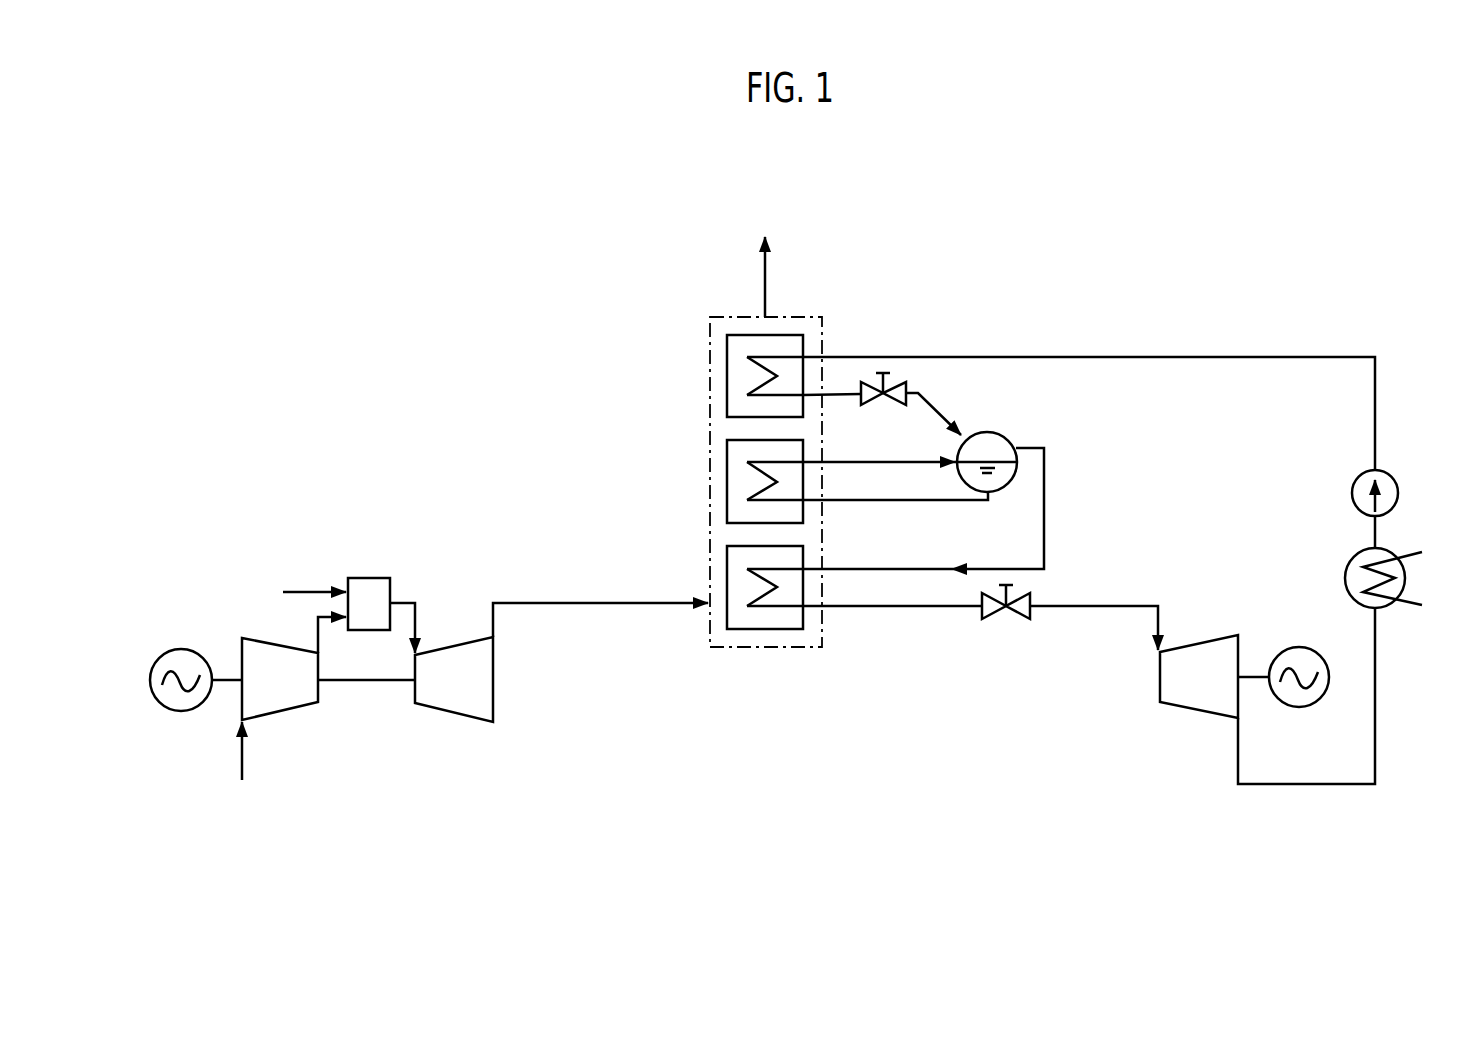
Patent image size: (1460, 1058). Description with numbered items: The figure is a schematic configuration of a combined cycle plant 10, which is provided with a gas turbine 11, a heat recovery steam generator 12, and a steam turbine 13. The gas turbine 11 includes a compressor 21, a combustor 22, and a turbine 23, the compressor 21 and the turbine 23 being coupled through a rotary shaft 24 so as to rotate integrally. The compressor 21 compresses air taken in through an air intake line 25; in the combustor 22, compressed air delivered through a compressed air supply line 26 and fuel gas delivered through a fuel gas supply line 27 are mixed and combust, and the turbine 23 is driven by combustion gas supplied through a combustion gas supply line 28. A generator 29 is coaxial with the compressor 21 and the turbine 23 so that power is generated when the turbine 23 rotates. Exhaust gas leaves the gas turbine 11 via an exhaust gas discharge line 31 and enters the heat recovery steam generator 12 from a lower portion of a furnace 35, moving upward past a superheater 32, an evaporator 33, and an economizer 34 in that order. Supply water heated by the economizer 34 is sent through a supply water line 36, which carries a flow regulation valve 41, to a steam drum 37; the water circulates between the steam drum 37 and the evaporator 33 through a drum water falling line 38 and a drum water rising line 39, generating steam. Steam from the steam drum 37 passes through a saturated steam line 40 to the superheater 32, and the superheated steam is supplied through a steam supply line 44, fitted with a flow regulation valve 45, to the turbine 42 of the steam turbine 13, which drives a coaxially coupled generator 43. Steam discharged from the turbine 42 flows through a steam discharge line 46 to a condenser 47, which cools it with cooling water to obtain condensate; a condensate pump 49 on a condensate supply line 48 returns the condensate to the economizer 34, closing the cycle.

The combined cycle plant 10 is at (568, 335).
The gas turbine 11 is at (338, 540).
The heat recovery steam generator 12 is at (848, 312).
The steam turbine 13 is at (1134, 754).
The compressor 21 is at (280, 713).
The combustor 22 is at (375, 577).
The turbine 23 is at (455, 713).
The rotary shaft 24 is at (368, 682).
The air intake line 25 is at (242, 758).
The compressed air supply line 26 is at (317, 627).
The fuel gas supply line 27 is at (297, 590).
The combustion gas supply line 28 is at (408, 602).
The generator 29 is at (150, 678).
The exhaust gas discharge line 31 is at (590, 600).
The superheater 32 is at (727, 558).
The evaporator 33 is at (727, 473).
The economizer 34 is at (727, 370).
The furnace 35 is at (805, 650).
The supply water line 36 is at (940, 407).
The steam drum 37 is at (1012, 437).
The drum water falling line 38 is at (918, 503).
The drum water rising line 39 is at (875, 460).
The saturated steam line 40 is at (1045, 497).
The flow regulation valve 41 is at (890, 365).
The turbine 42 is at (1198, 640).
The generator 43 is at (1297, 645).
The steam supply line 44 is at (913, 608).
The flow regulation valve 45 is at (1013, 620).
The steam discharge line 46 is at (1376, 710).
The condenser 47 is at (1344, 575).
The condensate supply line 48 is at (1298, 355).
The condensate pump 49 is at (1351, 489).